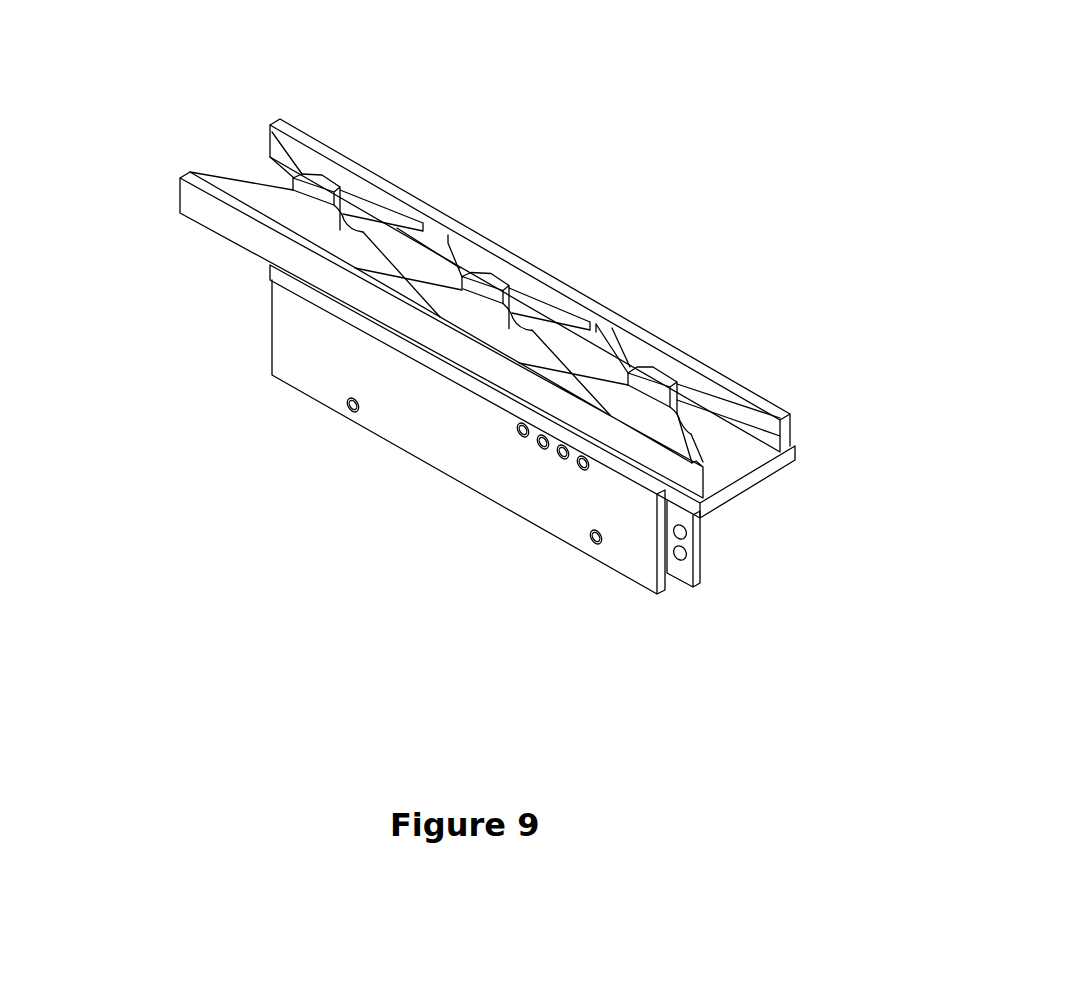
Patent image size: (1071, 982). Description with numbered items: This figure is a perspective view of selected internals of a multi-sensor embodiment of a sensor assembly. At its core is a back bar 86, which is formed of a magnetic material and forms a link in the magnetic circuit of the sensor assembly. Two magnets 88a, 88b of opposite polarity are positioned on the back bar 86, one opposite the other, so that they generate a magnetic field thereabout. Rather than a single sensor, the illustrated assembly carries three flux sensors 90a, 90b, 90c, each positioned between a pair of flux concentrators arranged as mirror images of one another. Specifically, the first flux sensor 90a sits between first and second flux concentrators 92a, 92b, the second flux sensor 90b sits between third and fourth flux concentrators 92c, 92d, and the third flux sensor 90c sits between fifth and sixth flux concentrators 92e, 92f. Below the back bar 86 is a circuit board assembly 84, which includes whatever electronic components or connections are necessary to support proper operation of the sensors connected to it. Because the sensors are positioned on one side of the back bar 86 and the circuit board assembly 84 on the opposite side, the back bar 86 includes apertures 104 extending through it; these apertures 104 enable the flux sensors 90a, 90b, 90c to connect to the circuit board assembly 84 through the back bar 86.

The circuit board assembly 84 is at (475, 495).
The back bar 86 is at (722, 467).
The magnet 88a is at (190, 200).
The magnet 88b is at (283, 127).
The first flux sensor 90a is at (322, 183).
The second flux sensor 90b is at (490, 275).
The third flux sensor 90c is at (652, 378).
The first flux concentrator 92a is at (300, 210).
The second flux concentrator 92b is at (355, 187).
The third flux concentrator 92c is at (473, 310).
The fourth flux concentrator 92d is at (520, 284).
The fifth flux concentrator 92e is at (637, 403).
The sixth flux concentrator 92f is at (733, 380).
The aperture 104 is at (356, 221).